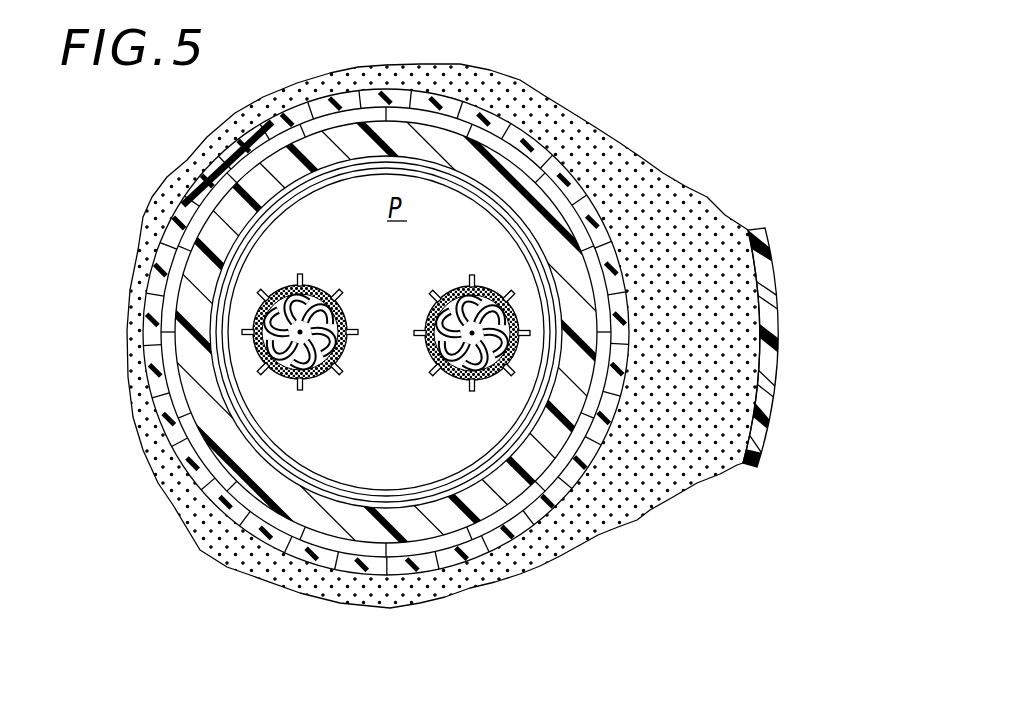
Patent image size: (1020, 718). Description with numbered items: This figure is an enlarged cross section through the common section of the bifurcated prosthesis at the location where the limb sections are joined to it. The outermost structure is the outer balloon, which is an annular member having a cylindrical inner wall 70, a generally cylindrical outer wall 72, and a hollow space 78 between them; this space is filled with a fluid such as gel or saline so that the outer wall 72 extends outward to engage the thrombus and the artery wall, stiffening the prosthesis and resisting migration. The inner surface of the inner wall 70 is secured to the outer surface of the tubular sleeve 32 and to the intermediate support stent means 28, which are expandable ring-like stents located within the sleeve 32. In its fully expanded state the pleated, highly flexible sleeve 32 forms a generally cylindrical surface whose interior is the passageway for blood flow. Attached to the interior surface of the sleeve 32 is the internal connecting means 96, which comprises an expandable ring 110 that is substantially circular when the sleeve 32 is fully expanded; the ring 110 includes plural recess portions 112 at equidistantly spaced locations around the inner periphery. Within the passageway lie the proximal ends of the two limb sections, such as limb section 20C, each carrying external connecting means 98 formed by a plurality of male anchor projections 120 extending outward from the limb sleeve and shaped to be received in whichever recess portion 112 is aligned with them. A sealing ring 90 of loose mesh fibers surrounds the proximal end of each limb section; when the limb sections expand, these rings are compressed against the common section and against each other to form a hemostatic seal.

The recess portions 112 is at (412, 160).
The hollow space 78 is at (657, 212).
The outer wall 72 is at (767, 272).
The inner wall 70 is at (605, 405).
The intermediate support stent means 28 is at (550, 477).
The expandable ring 110 is at (348, 505).
The internal connecting means 96 is at (345, 487).
The sealing ring 90 is at (288, 378).
The tubular sleeve 32 is at (317, 380).
The male anchor projections 120 is at (330, 278).
The external connecting means 98 is at (412, 360).
The limb section 20C is at (447, 385).